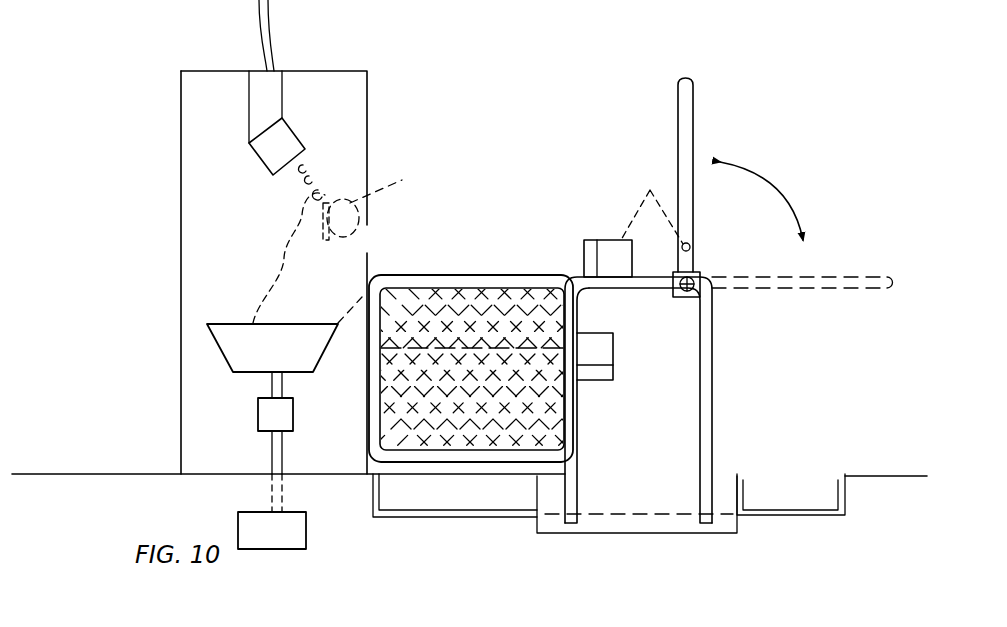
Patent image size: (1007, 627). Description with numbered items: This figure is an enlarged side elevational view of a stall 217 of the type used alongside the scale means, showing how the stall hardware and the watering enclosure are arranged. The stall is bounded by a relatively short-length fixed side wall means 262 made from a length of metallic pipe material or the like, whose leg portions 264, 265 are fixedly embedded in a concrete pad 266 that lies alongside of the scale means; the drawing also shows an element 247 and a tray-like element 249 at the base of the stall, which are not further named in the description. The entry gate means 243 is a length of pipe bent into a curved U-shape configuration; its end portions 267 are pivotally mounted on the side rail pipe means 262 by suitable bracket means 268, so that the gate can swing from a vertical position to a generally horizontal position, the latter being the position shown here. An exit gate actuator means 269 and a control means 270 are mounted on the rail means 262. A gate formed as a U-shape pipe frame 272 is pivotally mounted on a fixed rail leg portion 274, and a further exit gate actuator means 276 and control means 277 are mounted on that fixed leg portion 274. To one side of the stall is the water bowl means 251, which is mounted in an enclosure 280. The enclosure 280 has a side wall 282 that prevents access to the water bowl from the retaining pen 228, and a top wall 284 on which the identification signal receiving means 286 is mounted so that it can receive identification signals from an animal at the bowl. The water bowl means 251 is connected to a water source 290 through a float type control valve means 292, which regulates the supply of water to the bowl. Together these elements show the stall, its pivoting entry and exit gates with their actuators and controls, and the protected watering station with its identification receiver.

The pressing assembly 217 is at (551, 218).
The retaining pen 228 is at (63, 474).
The entry gate means 243 is at (692, 76).
The filter basket 247 is at (498, 274).
The drip tray 249 is at (450, 505).
The water bowl means 251 is at (233, 323).
The side wall means 262 is at (713, 427).
The leg portion 264 is at (578, 492).
The leg portion 265 is at (713, 495).
The concrete pad 266 is at (640, 528).
The end portions 267 is at (693, 268).
The bracket means 268 is at (688, 298).
The exit gate actuator means 269 is at (623, 267).
The control means 270 is at (586, 240).
The U-shape pipe frame 272 is at (372, 412).
The fixed rail leg portion 274 is at (580, 312).
The exit gate actuator means 276 is at (603, 352).
The control means 277 is at (613, 374).
The enclosure 280 is at (181, 74).
The side wall 282 is at (181, 315).
The top wall 284 is at (236, 38).
The identification signal receiving means 286 is at (257, 168).
The water source 290 is at (306, 532).
The float type control valve means 292 is at (258, 420).